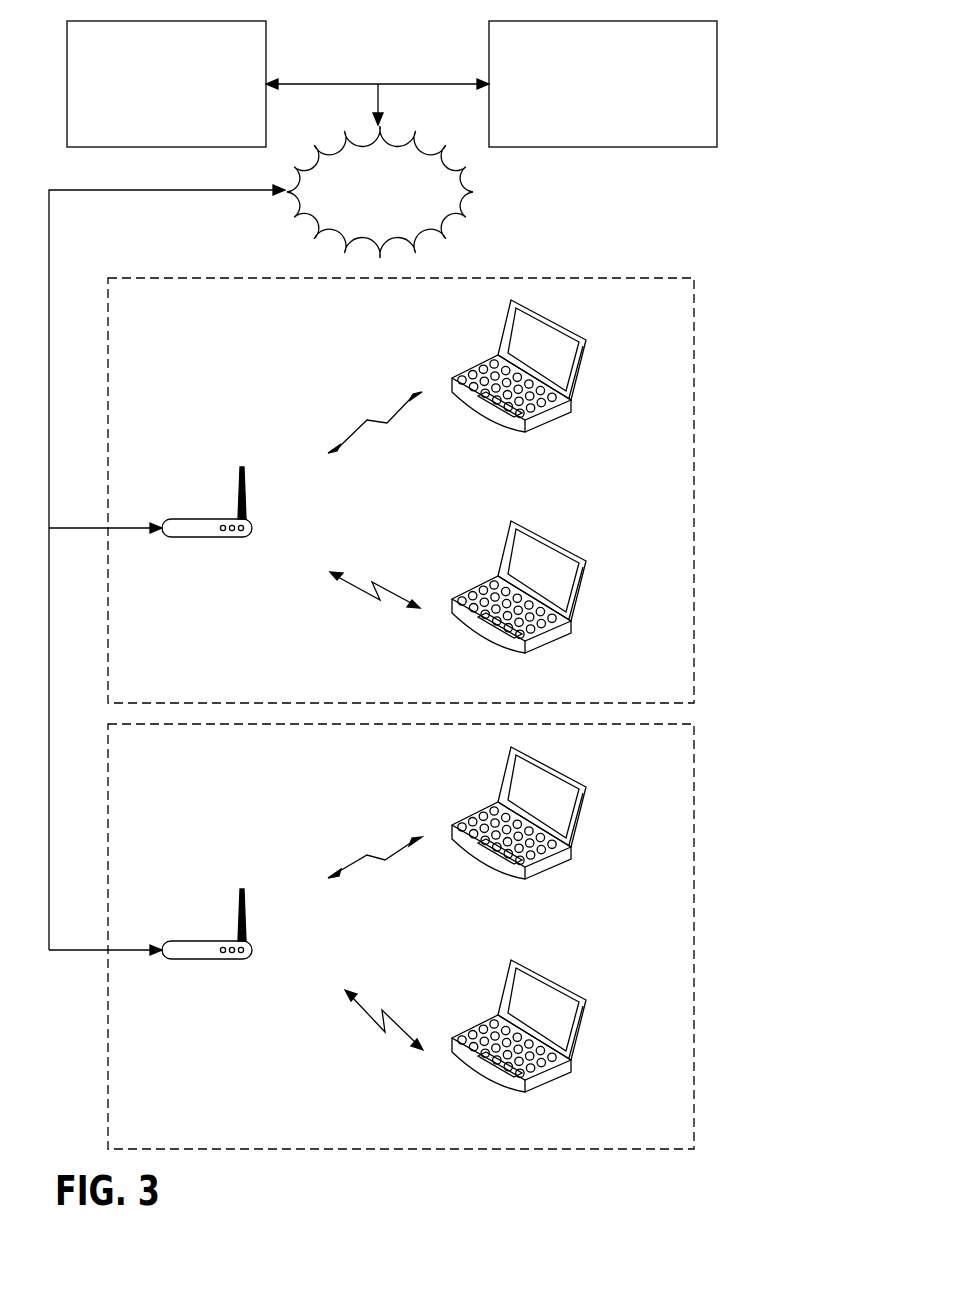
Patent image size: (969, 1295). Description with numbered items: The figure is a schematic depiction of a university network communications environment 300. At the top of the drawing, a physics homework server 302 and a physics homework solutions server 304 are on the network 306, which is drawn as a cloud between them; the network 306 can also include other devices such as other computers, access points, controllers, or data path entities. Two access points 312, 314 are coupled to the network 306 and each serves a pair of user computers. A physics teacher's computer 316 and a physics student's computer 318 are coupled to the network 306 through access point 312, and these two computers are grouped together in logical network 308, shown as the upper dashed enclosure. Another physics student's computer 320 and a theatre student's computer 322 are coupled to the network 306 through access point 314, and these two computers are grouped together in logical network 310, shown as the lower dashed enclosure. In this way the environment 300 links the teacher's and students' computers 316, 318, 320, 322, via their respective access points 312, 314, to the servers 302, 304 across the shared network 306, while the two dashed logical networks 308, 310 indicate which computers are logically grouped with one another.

The university network communications environment 300 is at (760, 82).
The physics homework server 302 is at (166, 84).
The physics homework solutions server 304 is at (603, 84).
The network 306 is at (380, 192).
The logical network 308 is at (660, 268).
The logical network 310 is at (658, 1151).
The access point 312 is at (220, 542).
The access point 314 is at (220, 964).
The physics teacher's computer 316 is at (588, 340).
The physics student's computer 318 is at (588, 560).
The physics student's computer 320 is at (588, 787).
The theatre student's computer 322 is at (588, 1000).